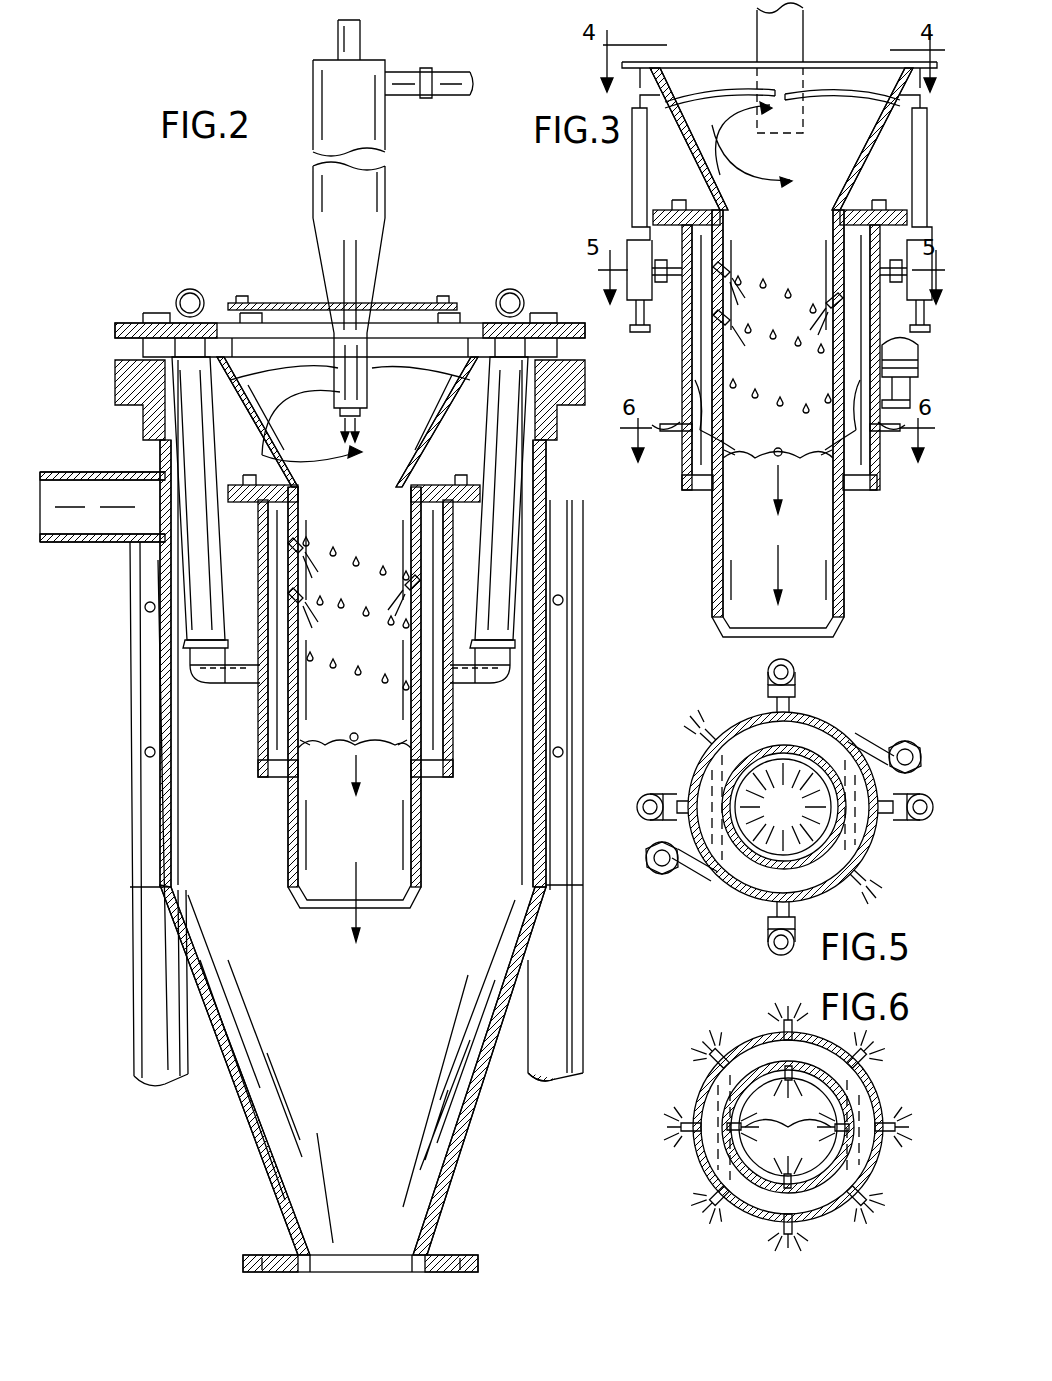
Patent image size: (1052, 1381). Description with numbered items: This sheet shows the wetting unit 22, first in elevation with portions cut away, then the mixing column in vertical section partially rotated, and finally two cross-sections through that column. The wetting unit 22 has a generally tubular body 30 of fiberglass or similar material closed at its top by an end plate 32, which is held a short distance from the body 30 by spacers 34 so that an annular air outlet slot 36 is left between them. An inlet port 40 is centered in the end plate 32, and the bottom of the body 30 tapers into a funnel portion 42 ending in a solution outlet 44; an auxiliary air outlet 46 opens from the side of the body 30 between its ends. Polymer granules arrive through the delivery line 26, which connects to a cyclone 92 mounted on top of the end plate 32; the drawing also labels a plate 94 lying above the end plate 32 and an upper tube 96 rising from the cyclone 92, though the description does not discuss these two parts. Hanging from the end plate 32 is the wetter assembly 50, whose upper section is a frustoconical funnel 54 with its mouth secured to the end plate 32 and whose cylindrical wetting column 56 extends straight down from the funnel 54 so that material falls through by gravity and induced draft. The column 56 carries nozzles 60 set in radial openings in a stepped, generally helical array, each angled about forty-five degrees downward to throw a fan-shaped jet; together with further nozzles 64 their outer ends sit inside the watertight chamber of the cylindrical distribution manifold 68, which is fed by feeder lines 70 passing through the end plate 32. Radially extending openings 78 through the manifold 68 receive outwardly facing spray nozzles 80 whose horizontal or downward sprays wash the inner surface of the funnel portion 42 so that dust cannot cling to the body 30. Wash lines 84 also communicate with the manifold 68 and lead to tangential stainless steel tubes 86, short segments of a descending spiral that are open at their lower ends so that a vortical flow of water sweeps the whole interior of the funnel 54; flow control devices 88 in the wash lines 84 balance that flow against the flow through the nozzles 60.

In FIG. 2, the wetting unit 22 is at (116, 943).
In FIG. 2, the powder or granule delivery line 26 is at (410, 73).
In FIG. 2, the tubular body 30 is at (545, 692).
In FIG. 2, the end plate 32 is at (567, 324).
In FIG. 2, the spacers 34 is at (143, 355).
In FIG. 2, the annular air outlet slot 36 is at (135, 350).
In FIG. 2, the inlet port 40 is at (226, 330).
In FIG. 2, the funnel portion 42 is at (452, 1168).
In FIG. 2, the solution outlet 44 is at (364, 1262).
In FIG. 2, the auxiliary air outlet 46 is at (78, 544).
In FIG. 2, the wetter assembly 50 is at (283, 855).
In FIG. 3, the wetter assembly 50 is at (884, 536).
In FIG. 5, the wetter assembly 50 is at (882, 868).
In FIG. 6, the wetter assembly 50 is at (880, 1183).
In FIG. 2, the frustoconical funnel 54 is at (446, 452).
In FIG. 3, the frustoconical funnel 54 is at (850, 172).
In FIG. 2, the cylindrical wetting column 56 is at (422, 815).
In FIG. 3, the cylindrical wetting column 56 is at (846, 605).
In FIG. 5, the cylindrical wetting column 56 is at (812, 755).
In FIG. 6, the cylindrical wetting column 56 is at (855, 1078).
In FIG. 2, the nozzles 60 is at (303, 538).
In FIG. 3, the nozzles 60 is at (740, 262).
In FIG. 2, the nozzles 64 is at (302, 744).
In FIG. 3, the nozzles 64 is at (733, 460).
In FIG. 6, the nozzles 64 is at (788, 1175).
In FIG. 2, the cylindrical distribution manifold 68 is at (262, 542).
In FIG. 3, the cylindrical distribution manifold 68 is at (684, 355).
In FIG. 5, the cylindrical distribution manifold 68 is at (700, 755).
In FIG. 6, the cylindrical distribution manifold 68 is at (700, 1080).
In FIG. 2, the feeder lines 70 is at (180, 292).
In FIG. 3, the feeder lines 70 is at (884, 385).
In FIG. 5, the feeder lines 70 is at (912, 742).
In FIG. 3, the radially extending openings 78 is at (685, 428).
In FIG. 6, the radially extending openings 78 is at (692, 1125).
In FIG. 3, the outwardly facing spray nozzles 80 is at (668, 433).
In FIG. 5, the outwardly facing spray nozzles 80 is at (700, 722).
In FIG. 6, the outwardly facing spray nozzles 80 is at (780, 1018).
In FIG. 3, the wash lines 84 is at (678, 240).
In FIG. 5, the wash lines 84 is at (764, 670).
In FIG. 3, the tangential stainless steel tubes 86 is at (695, 92).
In FIG. 3, the flow control devices 88 is at (630, 245).
In FIG. 2, the cyclone 92 is at (314, 88).
In FIG. 2, the plate 94 is at (282, 302).
In FIG. 2, the vent tube 96 is at (362, 42).